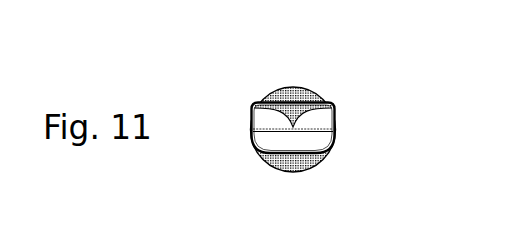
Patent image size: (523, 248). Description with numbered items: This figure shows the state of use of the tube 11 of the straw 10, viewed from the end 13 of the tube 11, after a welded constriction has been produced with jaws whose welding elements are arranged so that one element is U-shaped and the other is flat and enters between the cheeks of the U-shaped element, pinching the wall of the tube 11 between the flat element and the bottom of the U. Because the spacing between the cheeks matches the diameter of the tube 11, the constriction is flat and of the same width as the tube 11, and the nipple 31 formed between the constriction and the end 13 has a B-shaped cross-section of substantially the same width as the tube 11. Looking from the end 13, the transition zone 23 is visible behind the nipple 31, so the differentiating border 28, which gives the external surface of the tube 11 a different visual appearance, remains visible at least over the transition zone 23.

The straw 10 is at (349, 78).
The tube 11 is at (300, 92).
The differentiating border 28 is at (291, 91).
The nipple 31 is at (335, 118).
The end 13 is at (313, 165).
The transition zone 23 is at (290, 163).